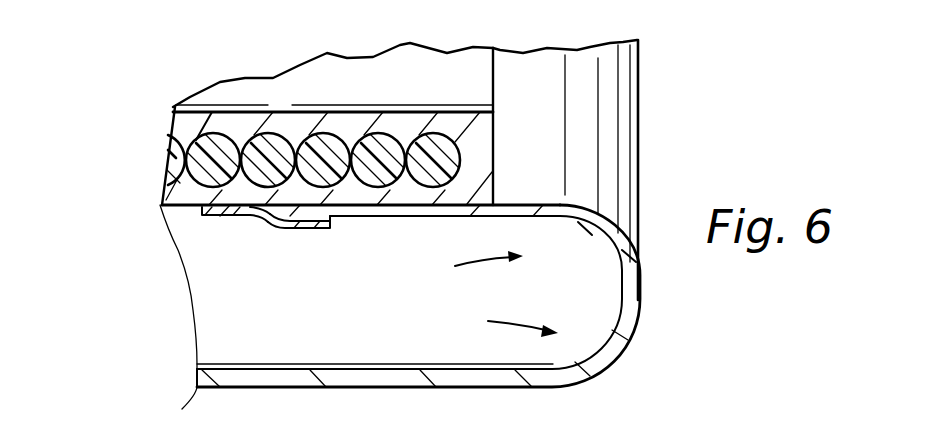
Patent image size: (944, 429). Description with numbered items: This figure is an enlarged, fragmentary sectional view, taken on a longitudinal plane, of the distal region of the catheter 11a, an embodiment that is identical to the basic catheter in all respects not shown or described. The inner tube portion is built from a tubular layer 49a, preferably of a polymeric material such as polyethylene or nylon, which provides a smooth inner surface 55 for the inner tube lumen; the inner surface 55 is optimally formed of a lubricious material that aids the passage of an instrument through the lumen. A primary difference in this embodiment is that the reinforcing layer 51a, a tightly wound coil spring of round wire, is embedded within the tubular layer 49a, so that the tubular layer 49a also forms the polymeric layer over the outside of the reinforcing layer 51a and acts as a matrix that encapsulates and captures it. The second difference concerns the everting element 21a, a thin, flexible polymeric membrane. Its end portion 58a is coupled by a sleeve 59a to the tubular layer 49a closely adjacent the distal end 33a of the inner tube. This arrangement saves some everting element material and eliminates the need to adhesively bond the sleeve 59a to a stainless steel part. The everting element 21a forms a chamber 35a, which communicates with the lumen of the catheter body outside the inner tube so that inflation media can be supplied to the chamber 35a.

The catheter 11a is at (160, 104).
The tubular layer 49a is at (193, 120).
The inner surface 55 is at (453, 108).
The reinforcing layer 51a is at (166, 164).
The distal end 33a is at (496, 164).
The sleeve 59a is at (215, 217).
The end portion 58a is at (308, 216).
The chamber 35a is at (237, 305).
The everting element 21a is at (196, 389).